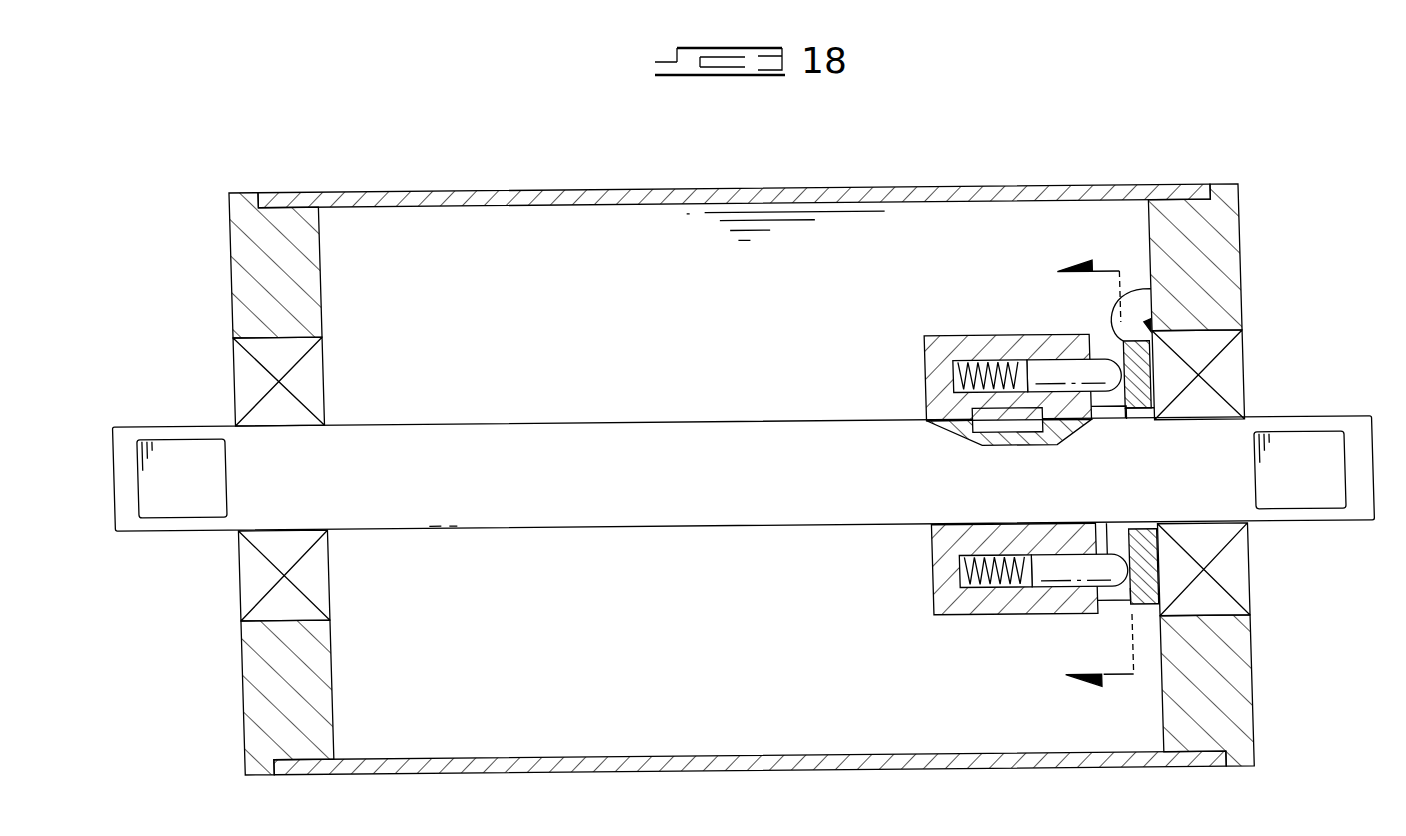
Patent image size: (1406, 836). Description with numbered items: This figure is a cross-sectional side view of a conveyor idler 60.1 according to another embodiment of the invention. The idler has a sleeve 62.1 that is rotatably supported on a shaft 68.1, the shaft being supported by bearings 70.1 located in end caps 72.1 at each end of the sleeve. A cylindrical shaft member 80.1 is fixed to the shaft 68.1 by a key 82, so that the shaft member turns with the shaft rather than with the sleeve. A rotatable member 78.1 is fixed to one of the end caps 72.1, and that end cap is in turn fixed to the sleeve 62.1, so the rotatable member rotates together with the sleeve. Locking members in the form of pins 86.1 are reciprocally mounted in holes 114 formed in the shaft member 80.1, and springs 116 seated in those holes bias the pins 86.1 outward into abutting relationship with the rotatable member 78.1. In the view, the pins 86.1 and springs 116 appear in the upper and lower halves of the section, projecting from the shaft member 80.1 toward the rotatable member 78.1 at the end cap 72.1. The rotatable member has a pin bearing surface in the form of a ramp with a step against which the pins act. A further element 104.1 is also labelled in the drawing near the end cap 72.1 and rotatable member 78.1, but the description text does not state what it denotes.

The conveyor idler 60.1 is at (576, 176).
The sleeve 62.1 is at (755, 195).
The end caps 72.1 is at (224, 290).
The bearings 70.1 is at (228, 592).
The shaft 68.1 is at (165, 426).
The shaft member 80.1 is at (920, 389).
The pins 86.1 is at (1055, 377).
The holes 114 is at (963, 373).
The springs 116 is at (963, 592).
The key 82 is at (998, 437).
The rotatable member 78.1 is at (1162, 363).
The seal 104.1 is at (1143, 338).